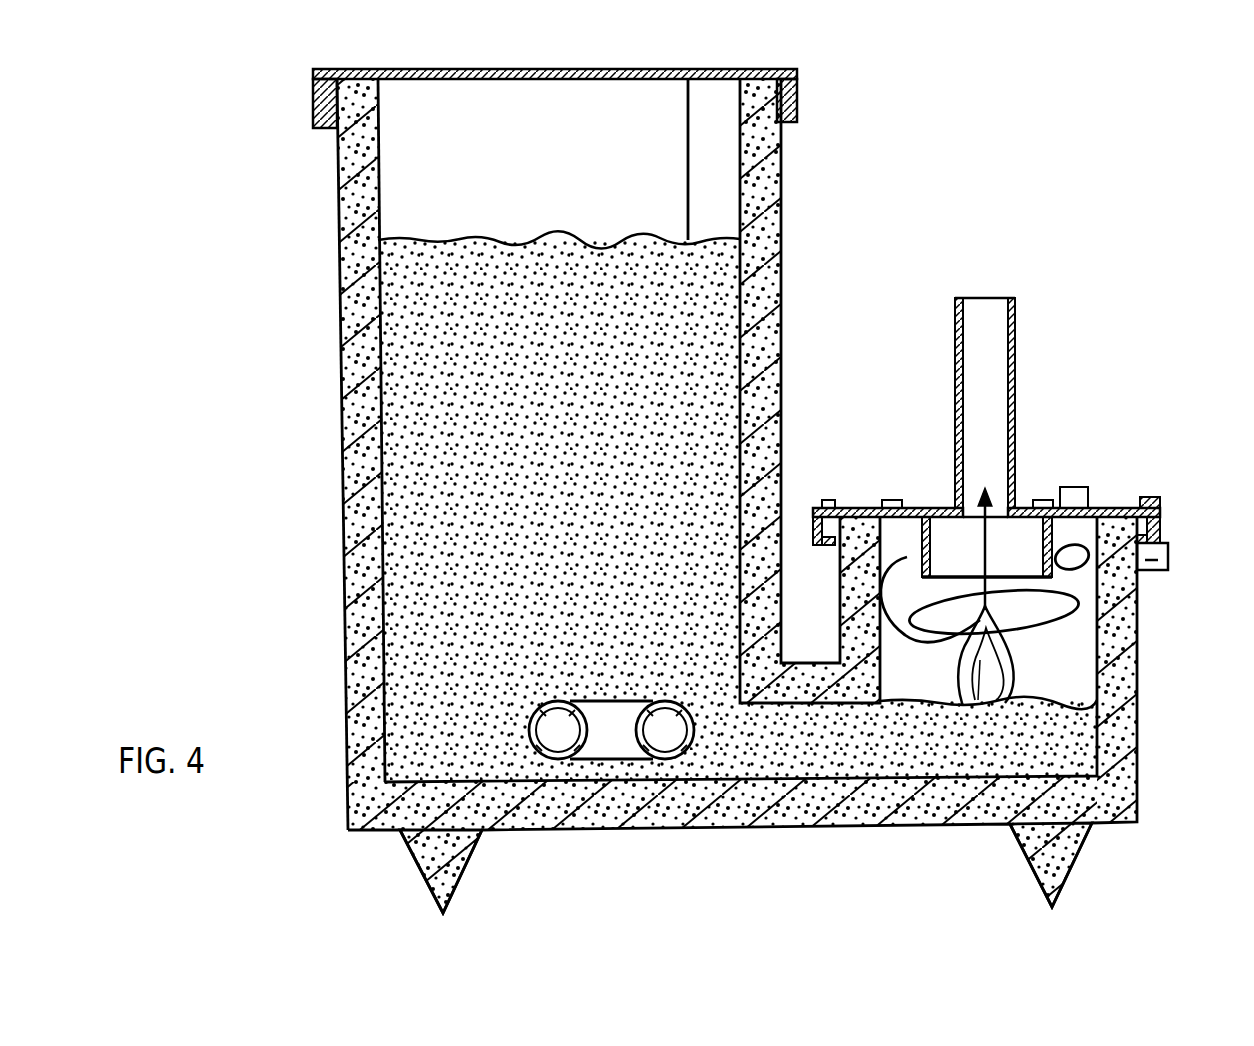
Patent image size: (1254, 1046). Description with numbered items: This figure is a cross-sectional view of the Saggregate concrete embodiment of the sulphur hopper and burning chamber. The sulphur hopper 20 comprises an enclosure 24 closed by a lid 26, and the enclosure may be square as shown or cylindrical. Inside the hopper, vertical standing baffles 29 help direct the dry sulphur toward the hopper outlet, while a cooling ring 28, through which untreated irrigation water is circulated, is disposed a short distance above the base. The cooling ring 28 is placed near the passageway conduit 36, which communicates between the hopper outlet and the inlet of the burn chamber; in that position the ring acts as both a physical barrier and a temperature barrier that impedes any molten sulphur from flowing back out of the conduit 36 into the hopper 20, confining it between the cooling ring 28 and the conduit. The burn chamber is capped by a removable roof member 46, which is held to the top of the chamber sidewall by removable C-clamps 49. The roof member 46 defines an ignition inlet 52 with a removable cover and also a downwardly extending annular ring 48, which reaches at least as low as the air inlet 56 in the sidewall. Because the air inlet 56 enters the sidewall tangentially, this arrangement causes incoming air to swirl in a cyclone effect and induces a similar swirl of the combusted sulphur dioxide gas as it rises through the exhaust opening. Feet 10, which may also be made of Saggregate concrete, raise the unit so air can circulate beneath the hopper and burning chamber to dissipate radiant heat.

The feet 10 is at (443, 857).
The sulphur hopper 20 is at (337, 270).
The enclosure 24 is at (357, 416).
The lid 26 is at (728, 70).
The cooling ring 28 is at (615, 740).
The vertical standing baffles 29 is at (720, 180).
The passageway conduit 36 is at (810, 680).
The roof member 46 is at (1127, 508).
The annular ring 48 is at (945, 547).
The C-clamps 49 is at (893, 502).
The ignition inlet 52 is at (1087, 487).
The air inlet 56 is at (1152, 573).